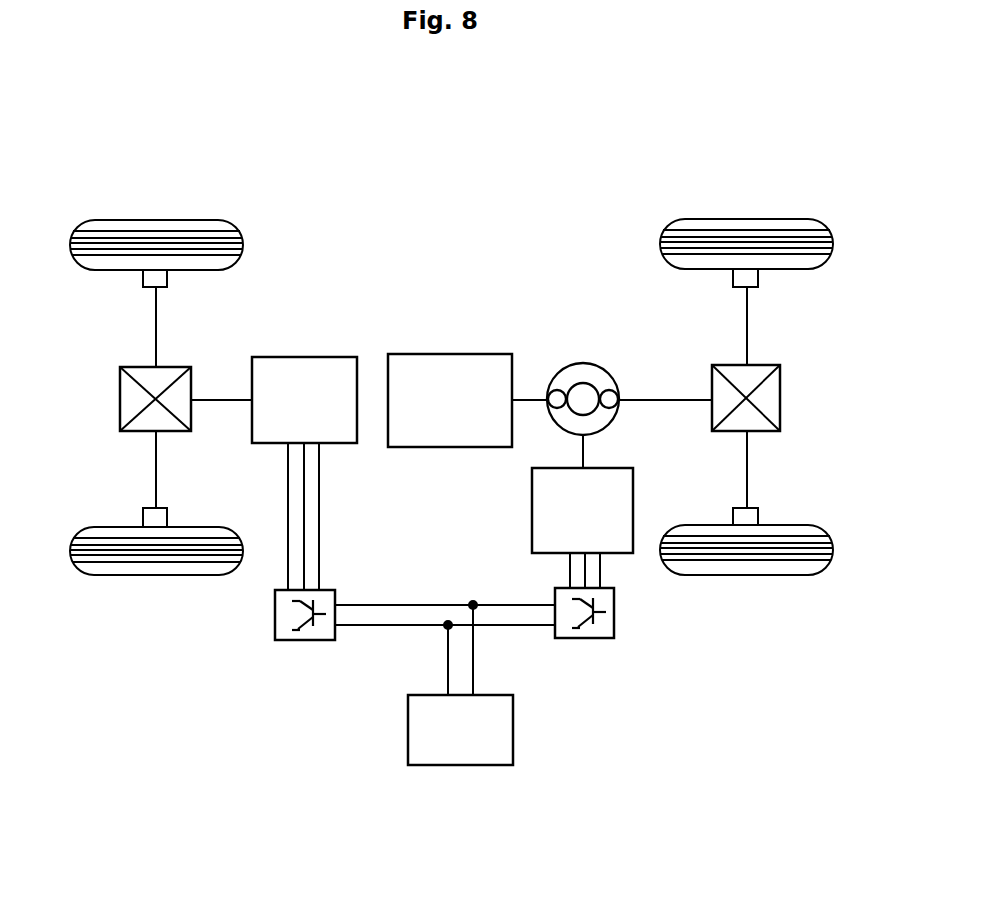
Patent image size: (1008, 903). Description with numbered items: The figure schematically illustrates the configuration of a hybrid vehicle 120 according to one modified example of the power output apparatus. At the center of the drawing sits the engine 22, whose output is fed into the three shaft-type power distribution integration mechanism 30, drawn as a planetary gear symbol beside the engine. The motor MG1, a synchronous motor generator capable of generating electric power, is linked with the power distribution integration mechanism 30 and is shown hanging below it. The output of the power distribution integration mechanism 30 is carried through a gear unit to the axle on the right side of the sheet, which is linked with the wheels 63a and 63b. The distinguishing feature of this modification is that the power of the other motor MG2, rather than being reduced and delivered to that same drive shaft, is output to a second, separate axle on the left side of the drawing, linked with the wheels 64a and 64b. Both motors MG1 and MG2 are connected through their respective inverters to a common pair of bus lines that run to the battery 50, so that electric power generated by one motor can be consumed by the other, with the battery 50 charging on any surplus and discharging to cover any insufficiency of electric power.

The hybrid vehicle 120 is at (478, 197).
The engine 22 is at (449, 354).
The power distribution integration mechanism 30 is at (583, 363).
The motor MG1 is at (532, 508).
The motor MG2 is at (302, 357).
The battery 50 is at (513, 728).
The wheel 63a is at (745, 218).
The wheel 63b is at (748, 575).
The wheel 64a is at (156, 220).
The wheel 64b is at (157, 575).